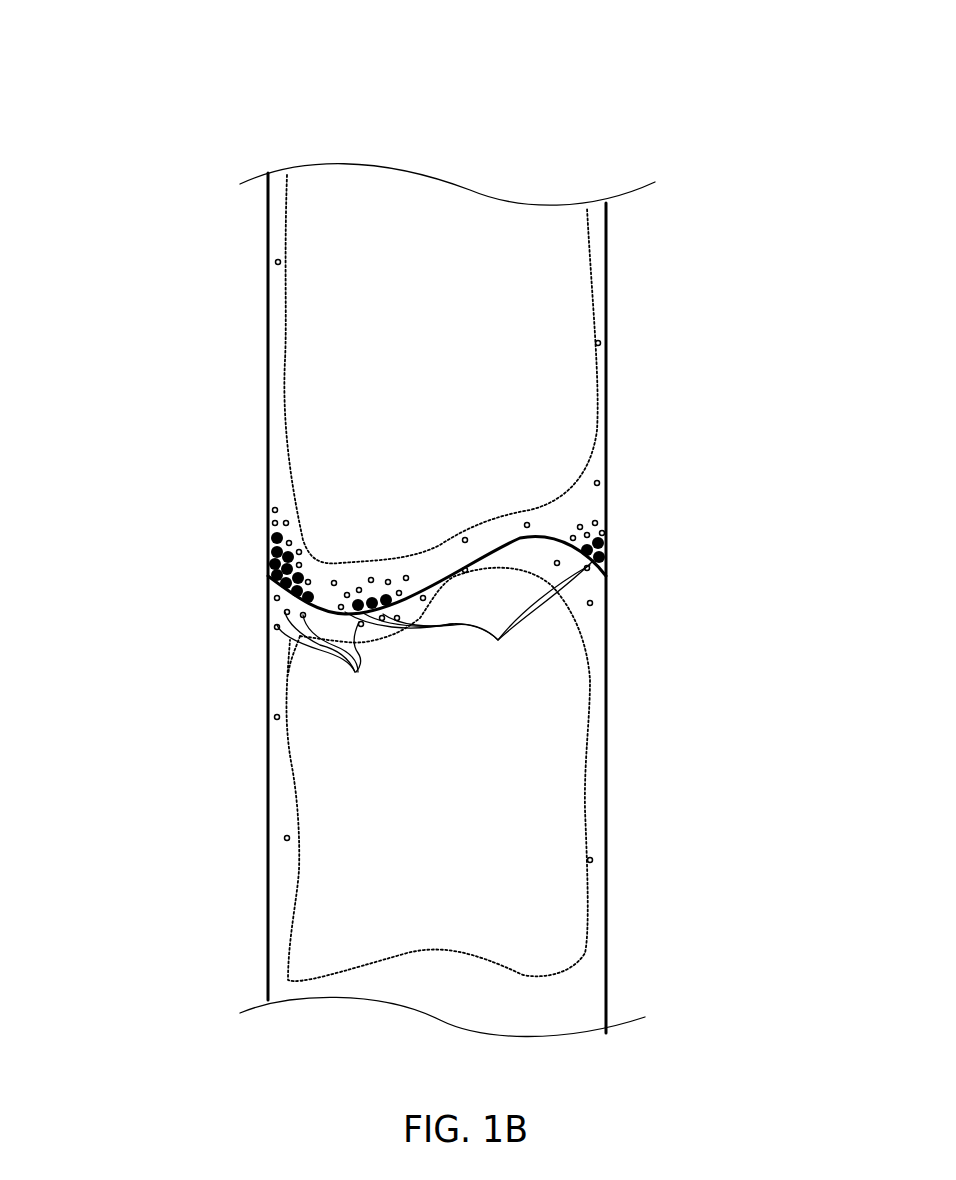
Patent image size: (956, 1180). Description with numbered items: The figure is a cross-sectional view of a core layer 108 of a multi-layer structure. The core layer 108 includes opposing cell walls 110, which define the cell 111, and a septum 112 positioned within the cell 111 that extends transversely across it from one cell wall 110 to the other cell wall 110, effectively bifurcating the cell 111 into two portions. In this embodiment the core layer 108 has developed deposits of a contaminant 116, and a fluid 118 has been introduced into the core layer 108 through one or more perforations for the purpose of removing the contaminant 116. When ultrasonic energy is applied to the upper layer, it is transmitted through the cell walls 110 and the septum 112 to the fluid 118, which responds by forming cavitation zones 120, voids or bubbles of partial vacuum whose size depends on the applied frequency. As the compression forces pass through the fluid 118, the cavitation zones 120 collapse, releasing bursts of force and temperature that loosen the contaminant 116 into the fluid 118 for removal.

The core layer 108 is at (146, 52).
The cell walls 110 is at (268, 292).
The cell 111 is at (474, 242).
The septum 112 is at (437, 567).
The contaminant 116 is at (471, 616).
The fluid 118 is at (287, 358).
The cavitation zones 120 is at (281, 717).